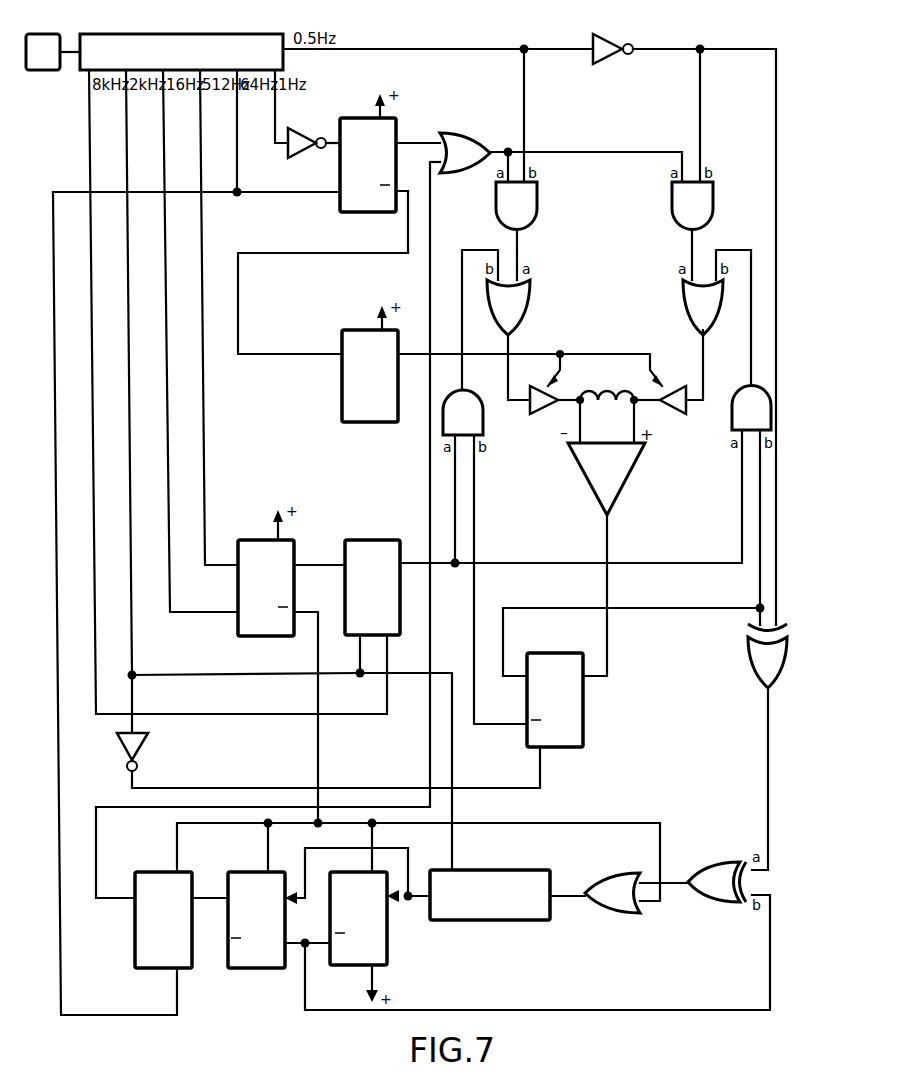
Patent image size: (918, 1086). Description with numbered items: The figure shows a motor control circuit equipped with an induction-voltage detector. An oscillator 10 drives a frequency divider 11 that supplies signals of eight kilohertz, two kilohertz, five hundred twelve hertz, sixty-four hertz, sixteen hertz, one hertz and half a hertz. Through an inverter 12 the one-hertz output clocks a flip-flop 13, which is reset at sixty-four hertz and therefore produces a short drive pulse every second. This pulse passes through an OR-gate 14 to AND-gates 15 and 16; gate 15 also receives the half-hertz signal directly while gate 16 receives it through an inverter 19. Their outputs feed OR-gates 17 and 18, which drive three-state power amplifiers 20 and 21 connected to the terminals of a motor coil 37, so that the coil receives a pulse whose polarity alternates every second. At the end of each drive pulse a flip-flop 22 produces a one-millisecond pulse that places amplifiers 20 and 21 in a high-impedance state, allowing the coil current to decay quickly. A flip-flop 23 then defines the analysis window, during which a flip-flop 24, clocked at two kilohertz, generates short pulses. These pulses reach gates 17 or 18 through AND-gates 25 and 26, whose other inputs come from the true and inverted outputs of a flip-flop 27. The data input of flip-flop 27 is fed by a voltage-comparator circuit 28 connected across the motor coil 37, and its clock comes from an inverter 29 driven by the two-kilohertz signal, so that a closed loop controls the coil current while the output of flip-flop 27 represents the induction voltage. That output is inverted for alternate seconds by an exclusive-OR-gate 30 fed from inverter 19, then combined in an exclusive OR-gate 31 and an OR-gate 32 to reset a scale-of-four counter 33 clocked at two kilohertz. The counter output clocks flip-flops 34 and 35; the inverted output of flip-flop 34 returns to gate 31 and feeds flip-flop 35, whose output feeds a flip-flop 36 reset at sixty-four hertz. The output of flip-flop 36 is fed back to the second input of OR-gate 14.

The oscillator 10 is at (41, 34).
The frequency divider 11 is at (160, 43).
The inverter 12 is at (296, 152).
The flip-flop 13 is at (368, 134).
The OR-gate 14 is at (474, 145).
The AND-gate 15 is at (530, 203).
The AND-gate 16 is at (680, 203).
The OR-gate 17 is at (520, 298).
The OR-gate 18 is at (696, 298).
The inverter 19 is at (600, 38).
The power amplifier 20 is at (542, 393).
The power amplifier 21 is at (680, 395).
The flip-flop 22 is at (365, 345).
The flip-flop 23 is at (262, 565).
The flip-flop 24 is at (370, 565).
The AND-gate 25 is at (475, 420).
The AND-gate 26 is at (743, 415).
The flip-flop 27 is at (553, 668).
The voltage-comparator circuit 28 is at (595, 468).
The inverter 29 is at (140, 745).
The exclusive-OR-gate 30 is at (758, 657).
The exclusive OR-gate 31 is at (712, 873).
The OR-gate 32 is at (610, 884).
The scale-of-4 counter 33 is at (494, 886).
The flip-flop 34 is at (350, 893).
The flip-flop 35 is at (251, 894).
The flip-flop 36 is at (161, 894).
The motor coil 37 is at (606, 390).